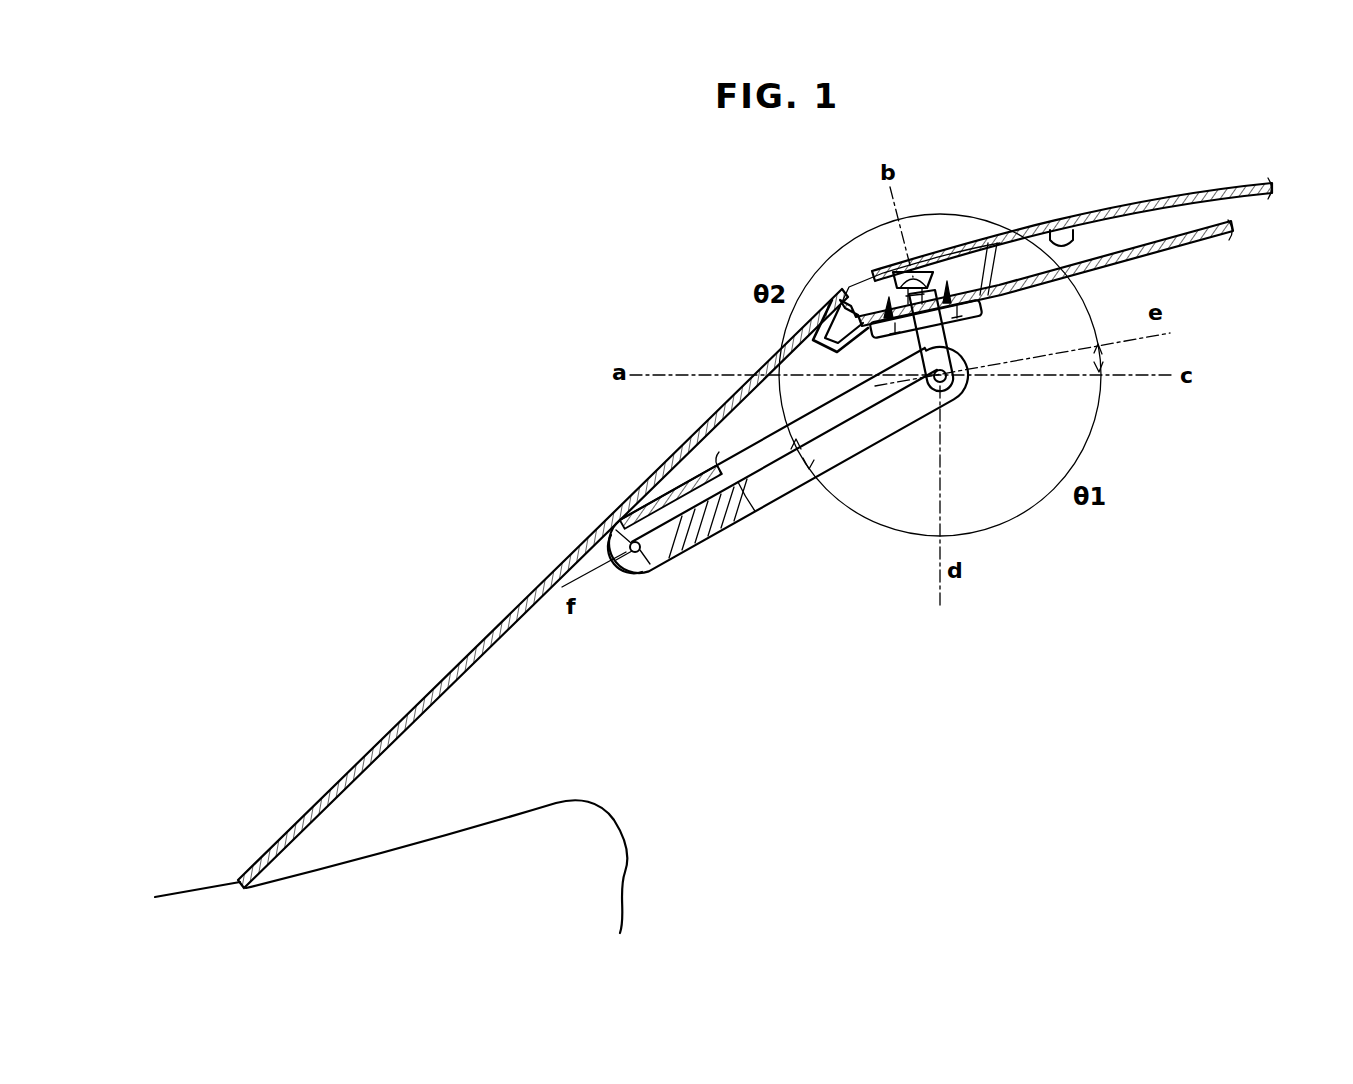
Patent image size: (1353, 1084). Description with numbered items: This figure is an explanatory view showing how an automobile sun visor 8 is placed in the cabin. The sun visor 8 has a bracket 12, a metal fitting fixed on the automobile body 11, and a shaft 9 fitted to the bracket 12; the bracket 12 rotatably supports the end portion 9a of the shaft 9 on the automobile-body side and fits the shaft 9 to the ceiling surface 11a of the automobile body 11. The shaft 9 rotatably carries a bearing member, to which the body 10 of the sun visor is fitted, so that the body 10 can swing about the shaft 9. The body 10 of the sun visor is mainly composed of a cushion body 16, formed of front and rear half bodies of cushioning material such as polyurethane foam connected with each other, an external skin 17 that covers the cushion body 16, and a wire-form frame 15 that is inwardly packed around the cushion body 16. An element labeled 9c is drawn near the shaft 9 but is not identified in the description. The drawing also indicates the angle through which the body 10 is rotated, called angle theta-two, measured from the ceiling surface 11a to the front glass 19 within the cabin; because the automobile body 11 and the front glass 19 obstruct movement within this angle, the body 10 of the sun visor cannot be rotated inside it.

The sun visor 8 is at (840, 524).
The shaft 9 is at (947, 337).
The end portion of the shaft 9a is at (916, 270).
The bracket 9c is at (884, 271).
The body of the sun visor 10 is at (768, 502).
The automobile body 11 is at (1173, 195).
The ceiling surface 11a is at (1066, 228).
The bracket 12 is at (982, 311).
The wire-form frame 15 is at (650, 573).
The cushion body 16 is at (706, 494).
The external skin 17 is at (670, 548).
The front glass 19 is at (684, 444).